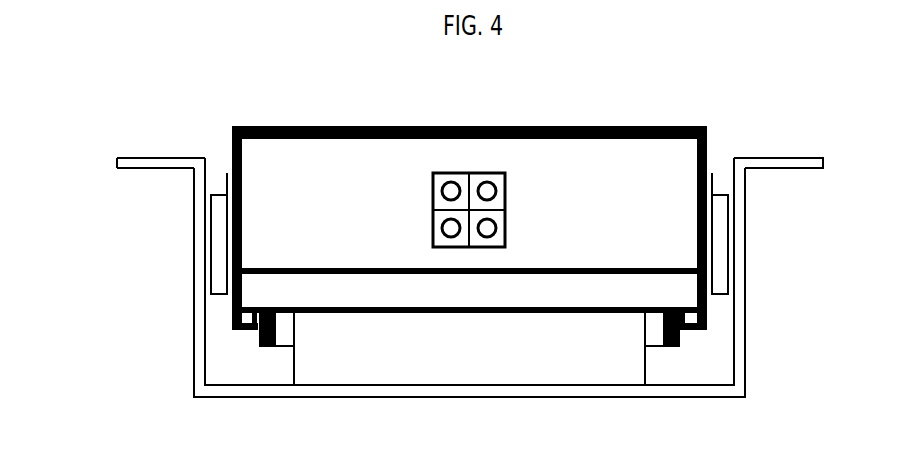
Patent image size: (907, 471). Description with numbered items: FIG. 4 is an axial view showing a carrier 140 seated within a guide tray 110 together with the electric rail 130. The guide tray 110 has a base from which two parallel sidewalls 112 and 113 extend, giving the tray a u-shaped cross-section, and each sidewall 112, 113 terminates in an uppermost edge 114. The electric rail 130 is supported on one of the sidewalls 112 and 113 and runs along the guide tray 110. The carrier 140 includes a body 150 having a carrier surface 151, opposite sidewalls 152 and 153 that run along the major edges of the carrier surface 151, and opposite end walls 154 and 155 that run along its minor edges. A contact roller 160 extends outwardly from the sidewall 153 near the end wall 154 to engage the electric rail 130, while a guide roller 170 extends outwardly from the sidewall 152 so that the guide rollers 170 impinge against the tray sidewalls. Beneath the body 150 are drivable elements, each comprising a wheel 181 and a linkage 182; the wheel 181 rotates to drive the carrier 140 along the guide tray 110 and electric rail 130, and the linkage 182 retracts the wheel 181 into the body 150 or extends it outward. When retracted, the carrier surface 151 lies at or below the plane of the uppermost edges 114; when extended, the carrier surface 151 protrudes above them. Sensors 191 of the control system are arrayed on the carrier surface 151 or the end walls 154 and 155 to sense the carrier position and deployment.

The guide tray 110 is at (470, 252).
The sidewall 112 is at (197, 222).
The sidewall 113 is at (740, 210).
The uppermost edge 114 is at (167, 157).
The electric rail 130 is at (732, 233).
The carrier 140 is at (470, 252).
The body 150 is at (563, 273).
The carrier surface 151 is at (380, 128).
The sidewall 152 is at (235, 147).
The sidewall 153 is at (703, 157).
The end wall 154 is at (610, 118).
The end wall 155 is at (600, 162).
The contact roller 160 is at (712, 269).
The guide roller 170 is at (220, 255).
The wheel 181 is at (362, 363).
The linkage 182 is at (272, 347).
The sensors 191 is at (461, 178).